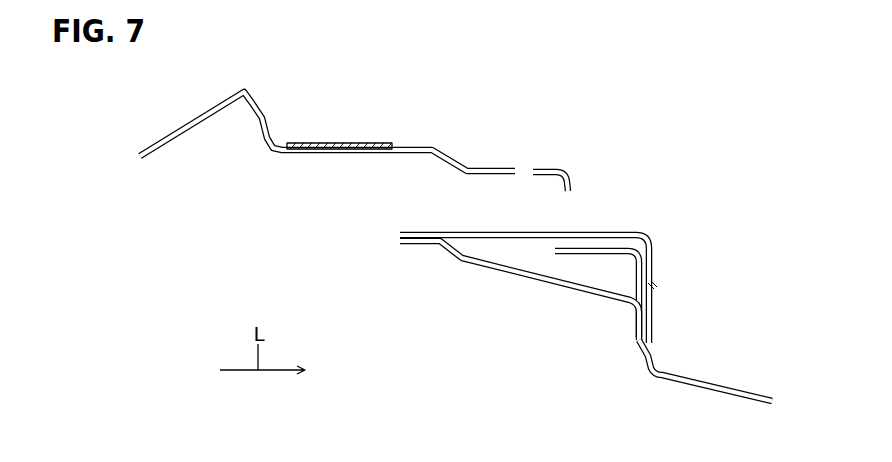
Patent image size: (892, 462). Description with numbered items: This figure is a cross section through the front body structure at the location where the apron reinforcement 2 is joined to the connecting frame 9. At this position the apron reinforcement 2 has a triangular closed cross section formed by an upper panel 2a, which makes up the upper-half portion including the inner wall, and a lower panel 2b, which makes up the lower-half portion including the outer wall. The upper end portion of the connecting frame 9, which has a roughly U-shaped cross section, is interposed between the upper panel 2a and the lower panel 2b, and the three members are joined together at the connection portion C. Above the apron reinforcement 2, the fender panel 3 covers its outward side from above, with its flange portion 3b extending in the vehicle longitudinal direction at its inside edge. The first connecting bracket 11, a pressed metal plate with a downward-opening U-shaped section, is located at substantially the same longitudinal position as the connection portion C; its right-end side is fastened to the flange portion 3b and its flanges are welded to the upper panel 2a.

The fender panel 3 is at (173, 132).
The flange portion 3b is at (315, 142).
The first connecting bracket 11 is at (443, 153).
The apron reinforcement 2 is at (601, 229).
The upper panel 2a is at (646, 243).
The lower panel 2b is at (514, 271).
The connection portion C is at (656, 287).
The connecting frame 9 is at (752, 391).